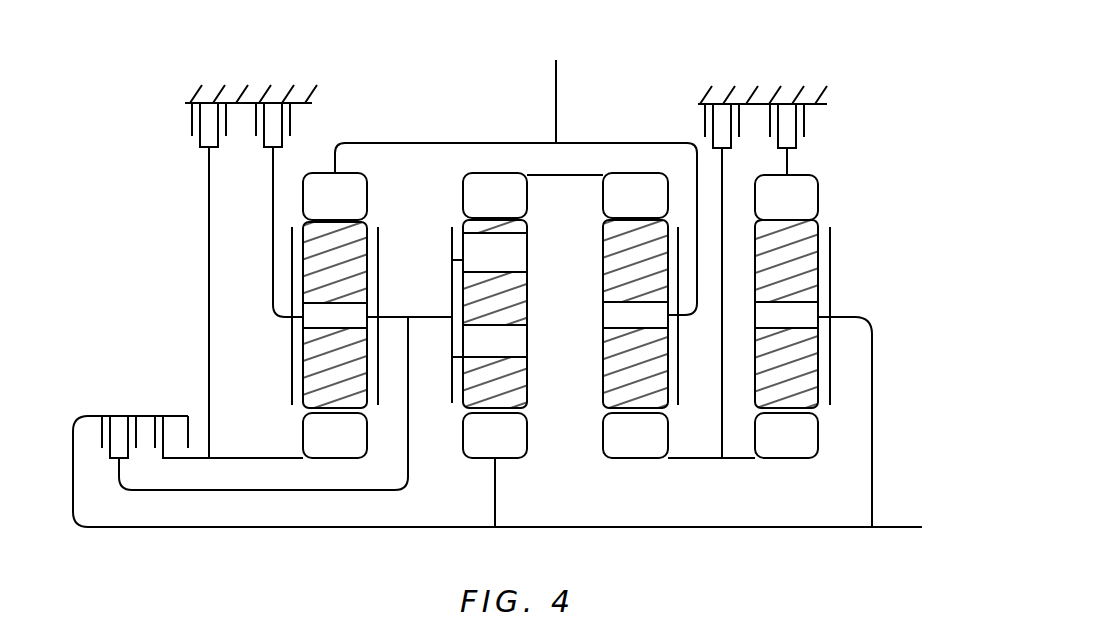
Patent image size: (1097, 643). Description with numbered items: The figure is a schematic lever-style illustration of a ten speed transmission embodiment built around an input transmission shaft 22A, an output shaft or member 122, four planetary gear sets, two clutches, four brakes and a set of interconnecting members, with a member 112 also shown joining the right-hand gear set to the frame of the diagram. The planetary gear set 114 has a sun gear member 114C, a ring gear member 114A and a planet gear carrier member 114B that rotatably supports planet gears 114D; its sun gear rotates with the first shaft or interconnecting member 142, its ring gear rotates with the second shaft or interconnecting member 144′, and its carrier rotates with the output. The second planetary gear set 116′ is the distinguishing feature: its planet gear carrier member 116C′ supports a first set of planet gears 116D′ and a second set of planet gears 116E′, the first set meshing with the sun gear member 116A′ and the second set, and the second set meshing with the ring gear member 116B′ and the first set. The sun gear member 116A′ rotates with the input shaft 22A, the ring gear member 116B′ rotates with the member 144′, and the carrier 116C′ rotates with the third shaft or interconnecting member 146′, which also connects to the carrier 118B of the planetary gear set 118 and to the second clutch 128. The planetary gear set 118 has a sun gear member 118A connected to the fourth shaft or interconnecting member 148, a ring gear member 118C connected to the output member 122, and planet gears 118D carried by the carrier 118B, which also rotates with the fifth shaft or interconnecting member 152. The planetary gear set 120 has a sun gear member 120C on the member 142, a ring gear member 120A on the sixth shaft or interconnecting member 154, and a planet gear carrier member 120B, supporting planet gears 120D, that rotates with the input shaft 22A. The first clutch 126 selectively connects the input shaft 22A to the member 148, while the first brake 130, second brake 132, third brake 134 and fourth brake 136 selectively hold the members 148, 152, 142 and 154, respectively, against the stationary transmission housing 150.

The input transmission shaft 22A is at (173, 529).
The interconnecting member 112 is at (872, 353).
The planetary gear set 114 is at (644, 346).
The ring gear member 114A is at (610, 207).
The planet gear carrier member 114B is at (680, 385).
The sun gear member 114C is at (610, 447).
The planet gears 114D is at (610, 327).
The second planetary gear set 116′ is at (458, 350).
The sun gear member 116A′ is at (468, 447).
The ring gear member 116B′ is at (468, 207).
The planet gear carrier member 116C′ is at (452, 293).
The first set of planet gears 116D′ is at (468, 353).
The second set of planet gears 116E′ is at (468, 260).
The planetary gear set 118 is at (340, 371).
The sun gear member 118A is at (310, 447).
The planet gear carrier member 118B is at (380, 245).
The ring gear member 118C is at (310, 208).
The planet gears 118D is at (310, 327).
The planetary gear set 120 is at (836, 348).
The ring gear member 120A is at (762, 209).
The planet gear carrier member 120B is at (830, 276).
The sun gear member 120C is at (762, 447).
The planet gears 120D is at (762, 327).
The output shaft or member 122 is at (392, 141).
The first clutch 126 is at (190, 434).
The second clutch 128 is at (102, 433).
The first brake 130 is at (192, 118).
The second brake 132 is at (256, 127).
The third brake 134 is at (705, 125).
The fourth brake 136 is at (804, 122).
The first shaft or interconnecting member 142 is at (677, 459).
The second shaft or interconnecting member 144′ is at (557, 176).
The third shaft or interconnecting member 146′ is at (408, 378).
The fourth shaft or interconnecting member 148 is at (208, 193).
The transmission housing 150 is at (243, 92).
The fifth shaft or interconnecting member 152 is at (273, 215).
The sixth shaft or interconnecting member 154 is at (787, 165).